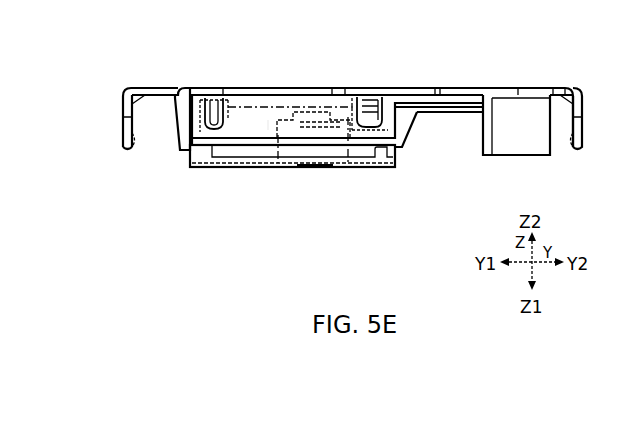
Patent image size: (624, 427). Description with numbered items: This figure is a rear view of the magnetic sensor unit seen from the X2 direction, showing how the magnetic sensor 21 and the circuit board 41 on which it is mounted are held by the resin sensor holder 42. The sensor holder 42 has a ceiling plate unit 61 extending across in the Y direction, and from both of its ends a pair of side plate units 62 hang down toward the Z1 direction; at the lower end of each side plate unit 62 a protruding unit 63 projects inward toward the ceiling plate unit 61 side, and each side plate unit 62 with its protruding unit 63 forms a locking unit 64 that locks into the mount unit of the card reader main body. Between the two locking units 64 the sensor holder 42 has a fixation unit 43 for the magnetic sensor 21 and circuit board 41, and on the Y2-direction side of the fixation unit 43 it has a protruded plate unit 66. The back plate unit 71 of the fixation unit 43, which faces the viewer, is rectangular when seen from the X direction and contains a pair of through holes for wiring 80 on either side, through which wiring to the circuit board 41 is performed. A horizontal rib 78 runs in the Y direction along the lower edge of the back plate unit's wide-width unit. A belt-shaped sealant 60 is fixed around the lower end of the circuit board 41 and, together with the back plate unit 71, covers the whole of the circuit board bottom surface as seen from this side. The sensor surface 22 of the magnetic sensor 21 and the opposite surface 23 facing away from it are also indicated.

The magnetic sensor 21 is at (305, 143).
The sensor surface 22 is at (312, 168).
The opposite surface 23 is at (312, 95).
The circuit board 41 is at (260, 95).
The sensor holder 42 is at (160, 85).
The fixation unit 43 is at (182, 151).
The sealant 60 is at (205, 157).
The ceiling plate unit 61 is at (460, 90).
The side plate unit 62 is at (123, 123).
The protruding unit 63 is at (133, 145).
The locking unit 64 is at (117, 131).
The protruded plate unit 66 is at (518, 143).
The back plate unit 71 is at (268, 120).
The horizontal rib 78 is at (247, 152).
The through hole for wiring 80 is at (213, 108).